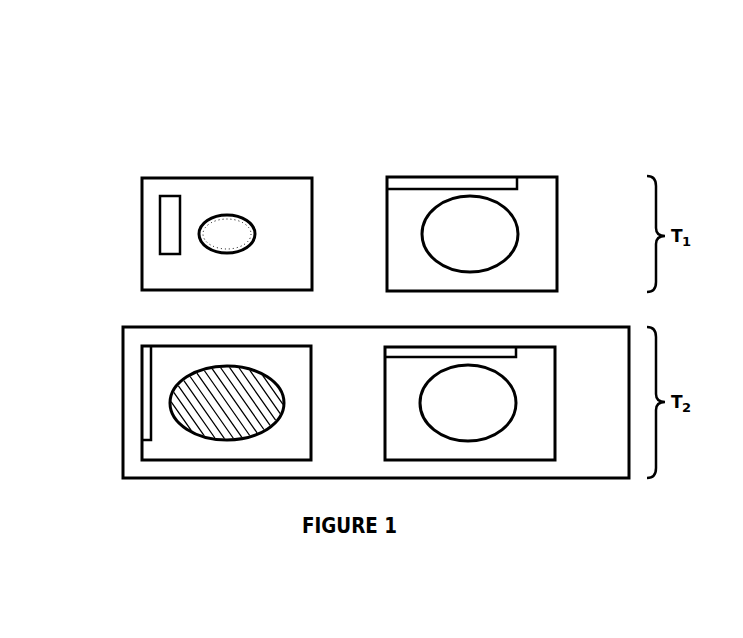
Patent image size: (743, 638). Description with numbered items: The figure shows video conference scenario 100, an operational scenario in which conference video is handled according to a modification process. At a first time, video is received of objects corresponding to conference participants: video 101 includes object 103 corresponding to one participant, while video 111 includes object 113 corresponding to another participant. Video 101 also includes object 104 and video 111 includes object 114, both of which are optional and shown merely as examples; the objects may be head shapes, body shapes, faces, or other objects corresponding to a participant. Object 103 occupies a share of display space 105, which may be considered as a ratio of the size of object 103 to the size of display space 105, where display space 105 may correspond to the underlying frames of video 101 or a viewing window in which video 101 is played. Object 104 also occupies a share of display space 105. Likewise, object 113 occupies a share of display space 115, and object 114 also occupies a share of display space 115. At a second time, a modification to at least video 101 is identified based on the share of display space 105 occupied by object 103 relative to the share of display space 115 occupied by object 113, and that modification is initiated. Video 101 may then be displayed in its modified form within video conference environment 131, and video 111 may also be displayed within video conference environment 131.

The video conference scenario 100 is at (114, 150).
The video 101 is at (312, 252).
The object 103 is at (251, 228).
The object 104 is at (179, 255).
The display space 105 is at (303, 283).
The video 111 is at (557, 250).
The object 113 is at (486, 244).
The object 114 is at (400, 192).
The display space 115 is at (548, 283).
The video conference environment 131 is at (618, 470).